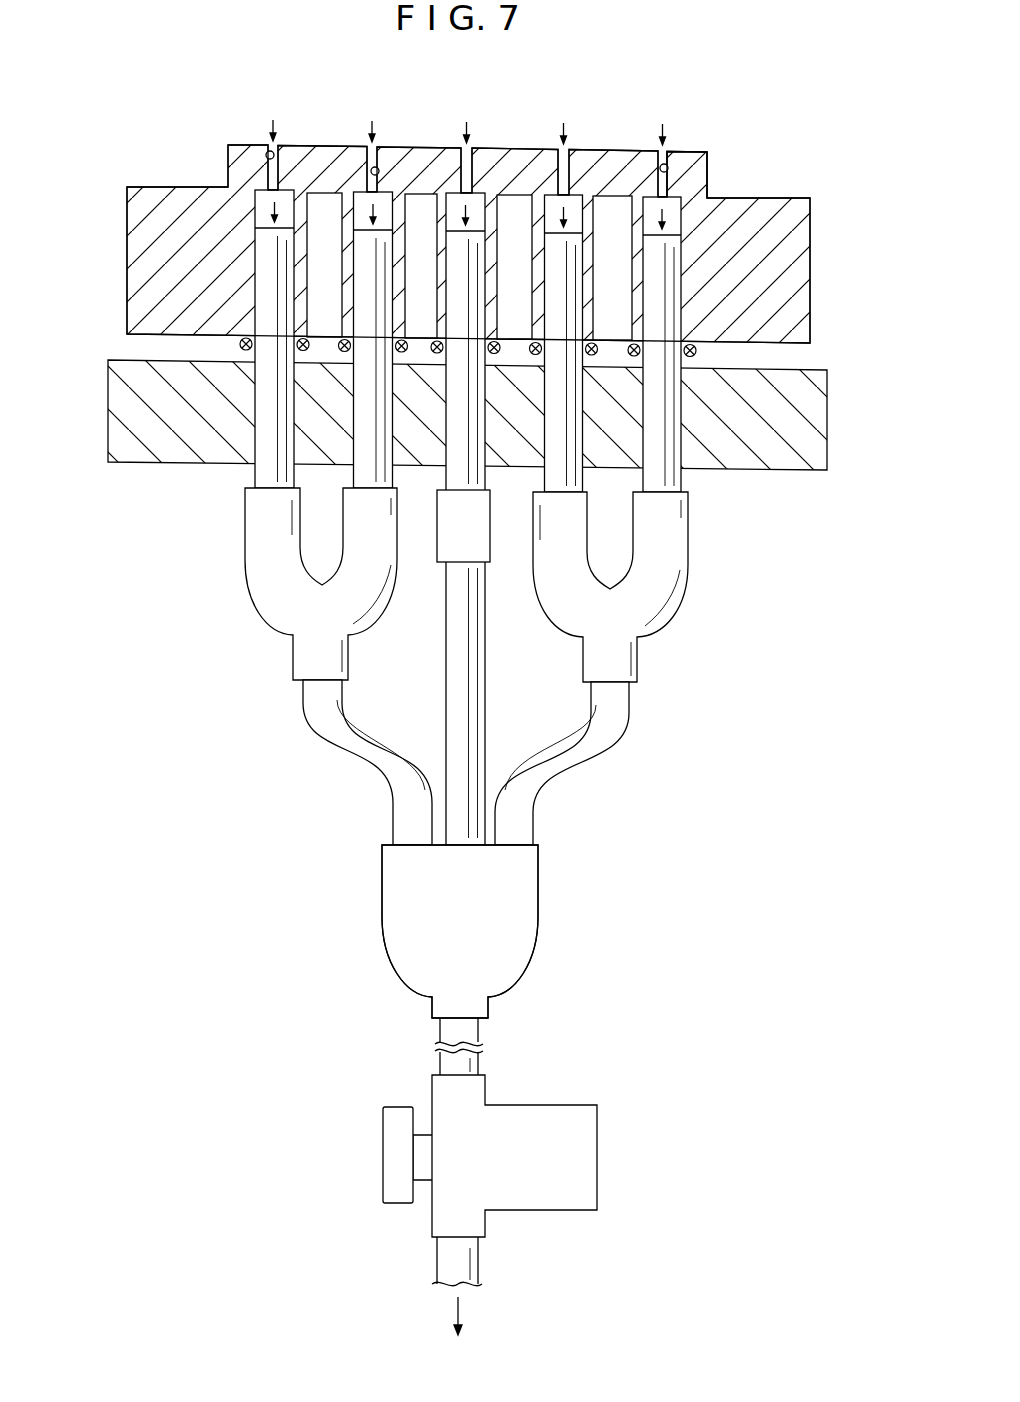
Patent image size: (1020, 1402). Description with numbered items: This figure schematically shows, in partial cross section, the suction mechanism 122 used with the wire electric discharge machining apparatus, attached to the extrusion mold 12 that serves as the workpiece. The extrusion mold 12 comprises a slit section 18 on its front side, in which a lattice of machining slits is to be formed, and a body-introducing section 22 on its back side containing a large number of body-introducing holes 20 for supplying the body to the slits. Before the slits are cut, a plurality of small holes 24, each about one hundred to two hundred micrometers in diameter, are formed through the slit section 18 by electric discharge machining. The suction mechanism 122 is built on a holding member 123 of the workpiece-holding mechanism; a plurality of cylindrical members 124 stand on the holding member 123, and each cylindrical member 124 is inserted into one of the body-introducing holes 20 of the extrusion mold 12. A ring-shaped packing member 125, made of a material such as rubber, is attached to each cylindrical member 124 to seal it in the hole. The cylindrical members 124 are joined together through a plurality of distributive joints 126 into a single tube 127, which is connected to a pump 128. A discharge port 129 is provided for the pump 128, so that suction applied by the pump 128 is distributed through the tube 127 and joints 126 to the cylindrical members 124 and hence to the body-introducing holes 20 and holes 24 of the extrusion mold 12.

The extrusion mold 12 is at (748, 150).
The slit section 18 is at (702, 146).
The body-introducing hole 20 is at (334, 201).
The body-introducing section 22 is at (815, 237).
The hole 24 is at (267, 152).
The suction mechanism 122 is at (714, 747).
The holding member 123 is at (800, 458).
The cylindrical member 124 is at (370, 463).
The ring-shaped packing member 125 is at (238, 340).
The distributive joint 126 is at (270, 595).
The tube 127 is at (465, 1030).
The pump 128 is at (582, 1153).
The discharge port 129 is at (460, 1267).